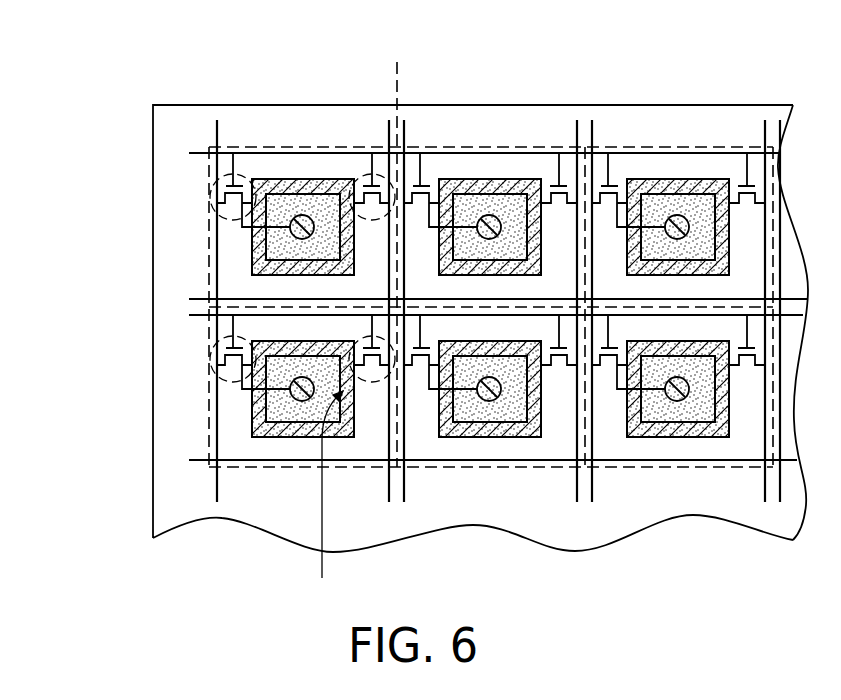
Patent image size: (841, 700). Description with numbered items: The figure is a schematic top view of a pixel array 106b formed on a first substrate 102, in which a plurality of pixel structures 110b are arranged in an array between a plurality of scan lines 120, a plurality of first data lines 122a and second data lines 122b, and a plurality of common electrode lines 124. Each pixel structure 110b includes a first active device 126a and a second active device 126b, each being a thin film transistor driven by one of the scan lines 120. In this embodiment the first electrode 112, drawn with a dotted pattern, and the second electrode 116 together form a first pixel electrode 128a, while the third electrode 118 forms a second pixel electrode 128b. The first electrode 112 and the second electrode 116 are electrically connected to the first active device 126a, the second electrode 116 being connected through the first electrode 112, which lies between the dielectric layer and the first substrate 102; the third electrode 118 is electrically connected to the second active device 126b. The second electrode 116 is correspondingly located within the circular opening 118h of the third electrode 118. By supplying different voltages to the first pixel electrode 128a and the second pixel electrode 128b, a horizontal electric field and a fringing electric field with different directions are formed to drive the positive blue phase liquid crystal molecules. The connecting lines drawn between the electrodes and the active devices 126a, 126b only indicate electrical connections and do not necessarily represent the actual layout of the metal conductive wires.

The first substrate 102 is at (177, 123).
The pixel array 106b is at (762, 601).
The pixel structure 110b is at (313, 146).
The first electrode 112 is at (253, 243).
The second electrode 116 is at (253, 230).
The third electrode 118 is at (253, 260).
The circular opening 118h is at (323, 502).
The scan line 120 is at (189, 153).
The first data line 122a is at (217, 133).
The second data line 122b is at (389, 133).
The common electrode line 124 is at (189, 298).
The first active device 126a is at (240, 160).
The second active device 126b is at (372, 165).
The first pixel electrode 128a is at (381, 304).
The second pixel electrode 128b is at (381, 327).